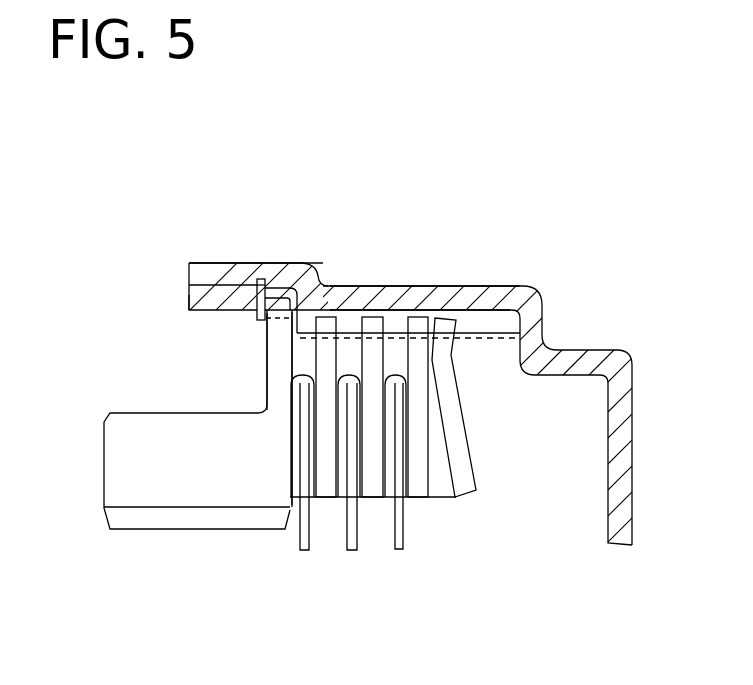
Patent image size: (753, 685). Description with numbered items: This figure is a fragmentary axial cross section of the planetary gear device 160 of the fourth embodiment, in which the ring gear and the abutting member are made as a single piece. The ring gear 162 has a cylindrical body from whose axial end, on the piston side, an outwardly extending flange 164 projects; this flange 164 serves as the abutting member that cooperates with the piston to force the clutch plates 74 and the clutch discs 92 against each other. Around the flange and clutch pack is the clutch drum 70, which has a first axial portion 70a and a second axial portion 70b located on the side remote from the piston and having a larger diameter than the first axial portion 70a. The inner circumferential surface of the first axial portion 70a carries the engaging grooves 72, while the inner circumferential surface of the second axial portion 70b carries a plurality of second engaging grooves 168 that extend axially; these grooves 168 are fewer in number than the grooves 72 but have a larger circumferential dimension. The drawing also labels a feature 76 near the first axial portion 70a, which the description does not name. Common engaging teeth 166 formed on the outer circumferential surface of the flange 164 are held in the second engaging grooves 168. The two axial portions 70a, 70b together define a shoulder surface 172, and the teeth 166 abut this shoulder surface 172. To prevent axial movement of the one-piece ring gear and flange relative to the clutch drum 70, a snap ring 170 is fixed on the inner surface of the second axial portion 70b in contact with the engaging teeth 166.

The planetary gear device 160 is at (607, 221).
The ring gear 162 is at (113, 443).
The flange 164 is at (277, 355).
The common engaging teeth 166 is at (278, 308).
The second engaging grooves 168 is at (190, 302).
The snap ring 170 is at (257, 298).
The shoulder surface 172 is at (286, 280).
The clutch drum 70 is at (515, 285).
The first axial portion 70a is at (455, 300).
The second axial portion 70b is at (252, 270).
The engaging grooves 72 is at (488, 312).
The clutch plates 74 is at (372, 447).
The openings 76 is at (372, 325).
The clutch discs 92 is at (395, 535).